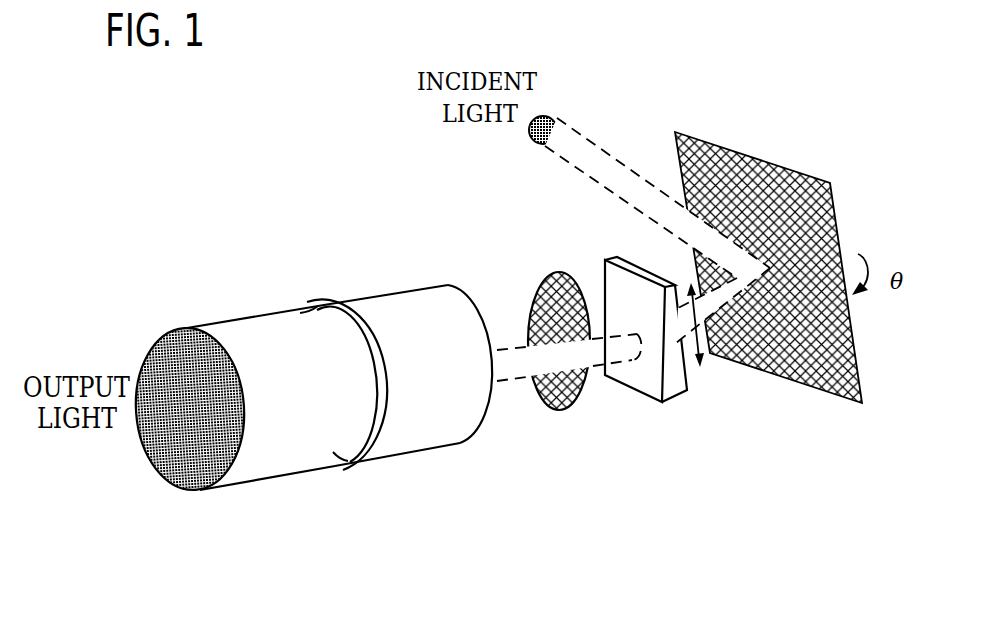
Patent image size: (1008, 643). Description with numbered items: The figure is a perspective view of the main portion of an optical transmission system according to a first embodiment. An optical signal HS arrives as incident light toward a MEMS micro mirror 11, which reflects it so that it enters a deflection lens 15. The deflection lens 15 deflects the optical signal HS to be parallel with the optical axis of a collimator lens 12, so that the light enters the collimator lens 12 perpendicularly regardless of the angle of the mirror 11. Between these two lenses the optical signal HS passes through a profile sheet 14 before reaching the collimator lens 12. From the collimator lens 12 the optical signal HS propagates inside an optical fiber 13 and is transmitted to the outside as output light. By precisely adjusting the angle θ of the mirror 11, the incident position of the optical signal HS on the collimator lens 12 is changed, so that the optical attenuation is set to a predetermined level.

The mirror 11 is at (768, 160).
The collimator lens 12 is at (428, 452).
The optical fiber 13 is at (285, 477).
The profile sheet 14 is at (562, 410).
The deflection lens 15 is at (642, 398).
The optical signal HS is at (597, 151).